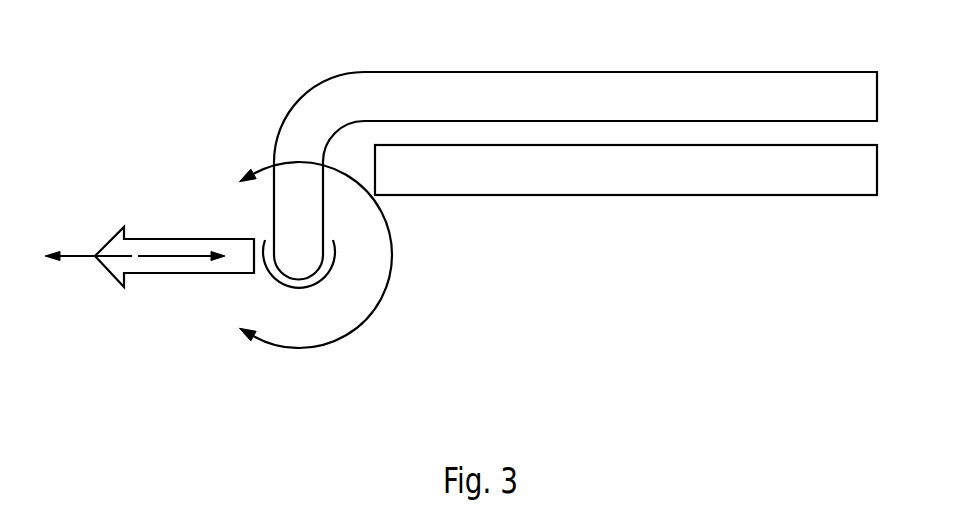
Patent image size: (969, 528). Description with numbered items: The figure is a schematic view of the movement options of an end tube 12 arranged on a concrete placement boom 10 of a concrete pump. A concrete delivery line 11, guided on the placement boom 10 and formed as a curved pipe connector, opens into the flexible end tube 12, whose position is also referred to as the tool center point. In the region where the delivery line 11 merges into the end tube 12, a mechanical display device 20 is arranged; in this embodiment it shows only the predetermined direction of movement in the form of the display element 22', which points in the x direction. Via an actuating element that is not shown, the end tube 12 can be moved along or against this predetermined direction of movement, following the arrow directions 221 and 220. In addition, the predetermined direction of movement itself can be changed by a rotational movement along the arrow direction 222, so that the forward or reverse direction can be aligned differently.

The placement boom 10 is at (788, 175).
The concrete delivery line 11 is at (318, 108).
The end tube 12 is at (269, 276).
The display device 20 is at (134, 188).
The second display element 22' is at (174, 290).
The arrow direction 220 is at (170, 253).
The arrow direction 221 is at (80, 253).
The arrow direction of rotational movement 222 is at (373, 312).